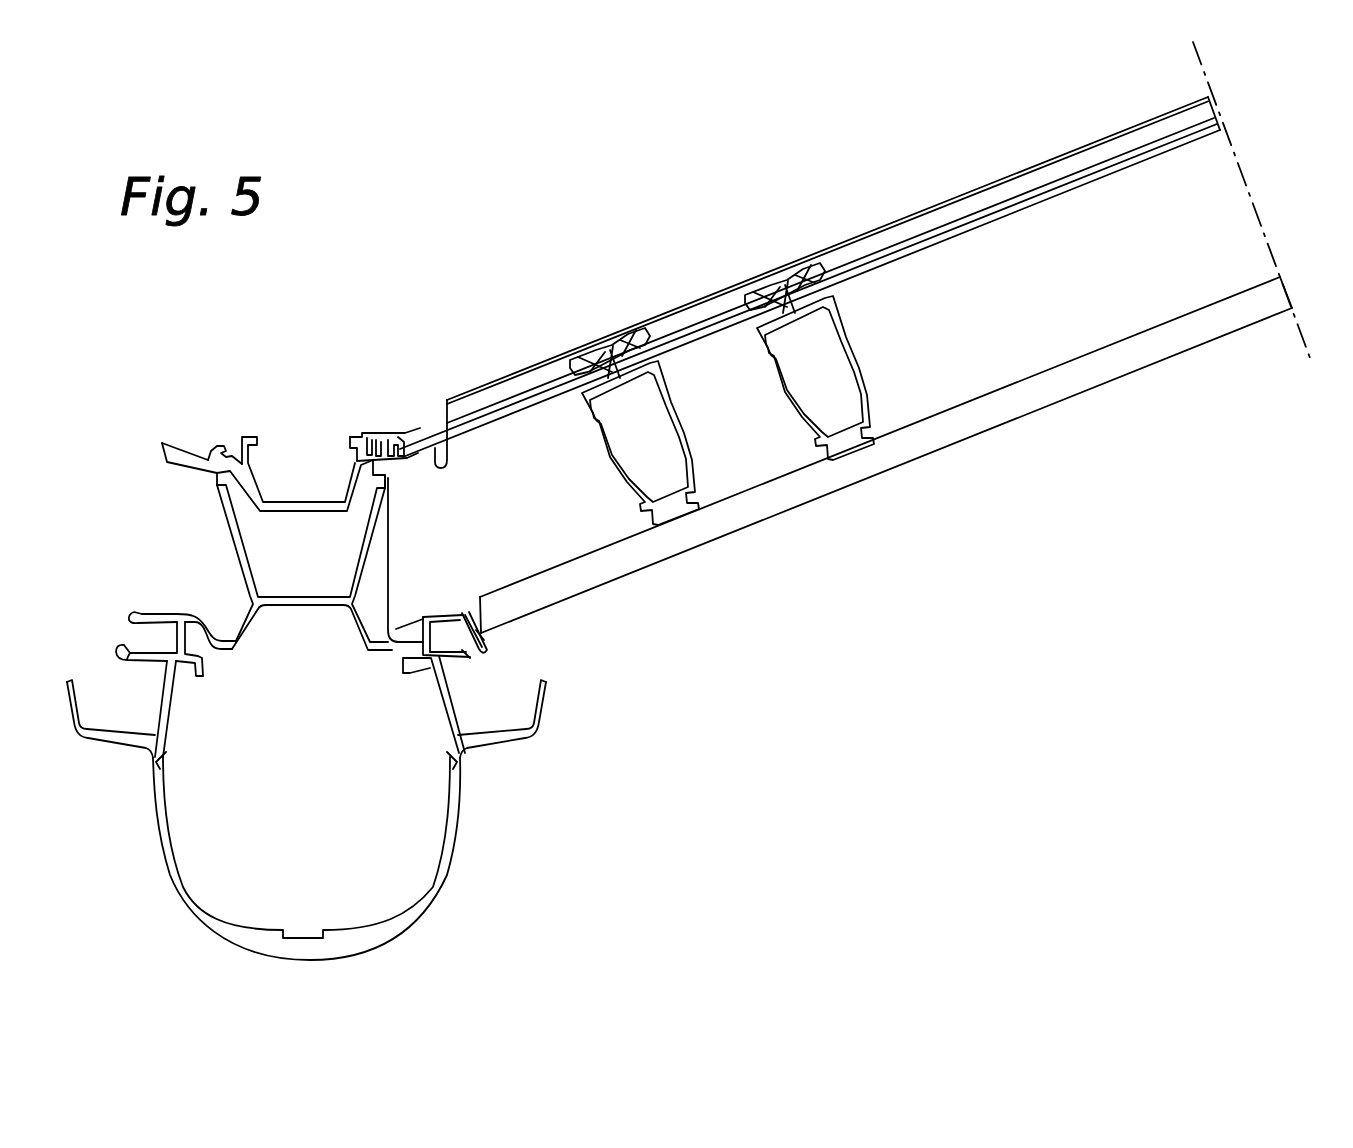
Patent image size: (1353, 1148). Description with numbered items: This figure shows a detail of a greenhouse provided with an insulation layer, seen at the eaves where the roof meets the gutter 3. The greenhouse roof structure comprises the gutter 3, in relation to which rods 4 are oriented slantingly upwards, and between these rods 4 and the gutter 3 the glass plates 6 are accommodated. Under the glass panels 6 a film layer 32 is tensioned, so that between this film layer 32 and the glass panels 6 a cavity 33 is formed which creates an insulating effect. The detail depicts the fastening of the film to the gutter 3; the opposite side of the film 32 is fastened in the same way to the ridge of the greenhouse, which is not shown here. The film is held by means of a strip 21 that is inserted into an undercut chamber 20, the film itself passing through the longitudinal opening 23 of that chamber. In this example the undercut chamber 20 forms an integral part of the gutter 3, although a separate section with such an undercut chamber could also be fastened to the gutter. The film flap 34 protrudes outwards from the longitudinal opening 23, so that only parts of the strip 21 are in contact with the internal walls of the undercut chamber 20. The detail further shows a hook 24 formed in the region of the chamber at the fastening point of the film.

The gutter 3 is at (1213, 215).
The rods 4 is at (1208, 257).
The glass plates 6 is at (1103, 174).
The undercut chamber 20 is at (489, 650).
The strip 21 is at (468, 655).
The longitudinal opening 23 is at (478, 616).
The hook 24 is at (481, 634).
The film layer 32 is at (815, 498).
The cavity 33 is at (1082, 330).
The film flap 34 is at (490, 610).